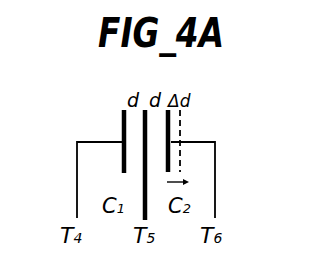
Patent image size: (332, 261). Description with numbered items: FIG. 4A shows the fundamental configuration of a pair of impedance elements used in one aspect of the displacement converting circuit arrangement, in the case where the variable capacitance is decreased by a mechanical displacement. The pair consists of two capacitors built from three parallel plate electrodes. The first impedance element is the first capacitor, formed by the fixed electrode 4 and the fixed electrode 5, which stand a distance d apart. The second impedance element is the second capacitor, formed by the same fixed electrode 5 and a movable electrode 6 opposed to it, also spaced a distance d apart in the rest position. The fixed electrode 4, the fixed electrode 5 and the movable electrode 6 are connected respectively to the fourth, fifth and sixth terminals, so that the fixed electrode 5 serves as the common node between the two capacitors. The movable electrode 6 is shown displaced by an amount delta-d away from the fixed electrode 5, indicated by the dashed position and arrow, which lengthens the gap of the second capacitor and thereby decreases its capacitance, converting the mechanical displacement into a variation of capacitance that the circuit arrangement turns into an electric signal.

The fixed electrode 4 is at (121, 127).
The fixed electrode 5 is at (144, 125).
The movable electrode 6 is at (172, 126).